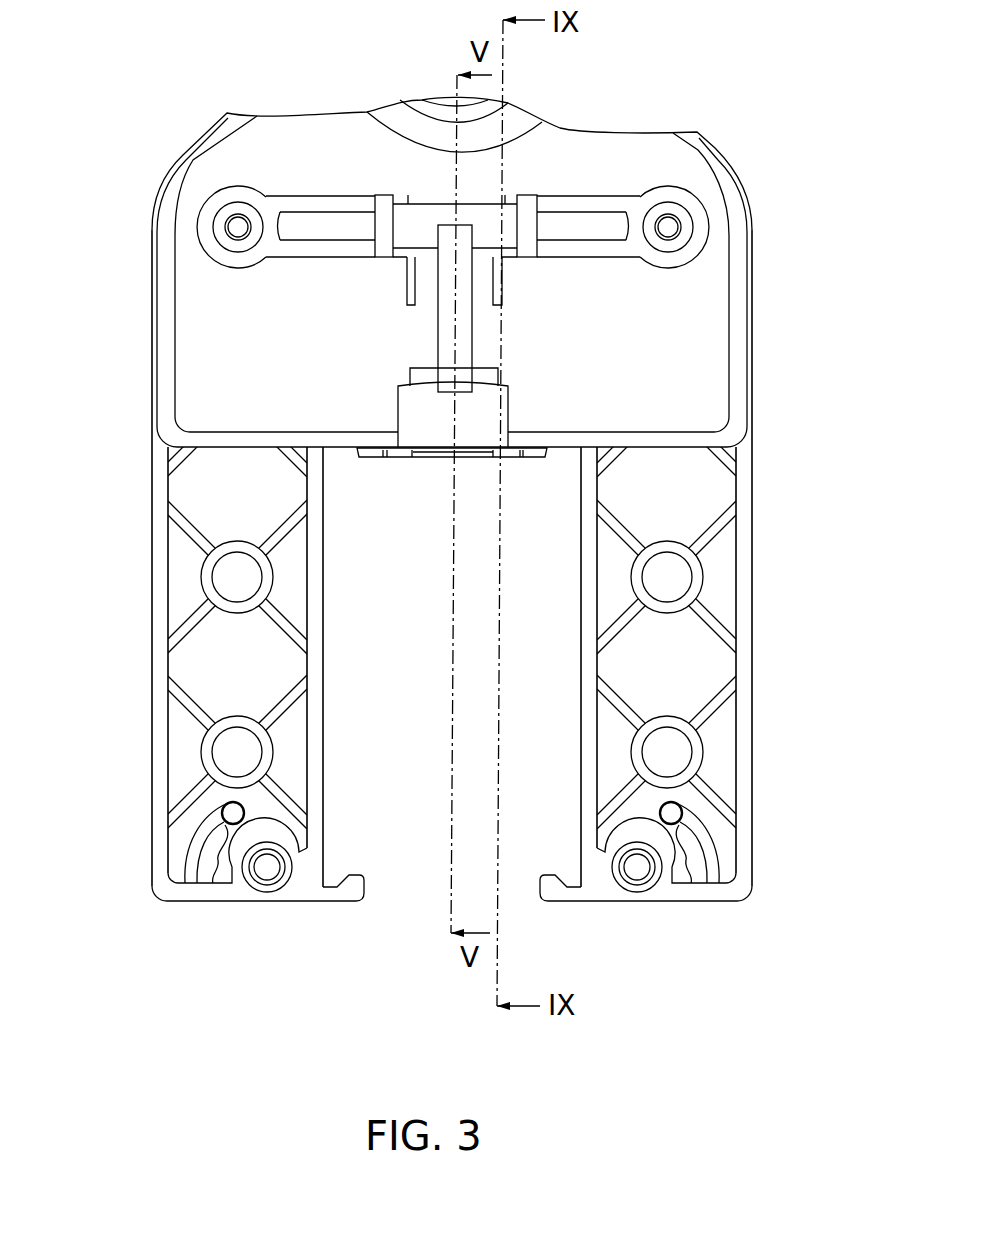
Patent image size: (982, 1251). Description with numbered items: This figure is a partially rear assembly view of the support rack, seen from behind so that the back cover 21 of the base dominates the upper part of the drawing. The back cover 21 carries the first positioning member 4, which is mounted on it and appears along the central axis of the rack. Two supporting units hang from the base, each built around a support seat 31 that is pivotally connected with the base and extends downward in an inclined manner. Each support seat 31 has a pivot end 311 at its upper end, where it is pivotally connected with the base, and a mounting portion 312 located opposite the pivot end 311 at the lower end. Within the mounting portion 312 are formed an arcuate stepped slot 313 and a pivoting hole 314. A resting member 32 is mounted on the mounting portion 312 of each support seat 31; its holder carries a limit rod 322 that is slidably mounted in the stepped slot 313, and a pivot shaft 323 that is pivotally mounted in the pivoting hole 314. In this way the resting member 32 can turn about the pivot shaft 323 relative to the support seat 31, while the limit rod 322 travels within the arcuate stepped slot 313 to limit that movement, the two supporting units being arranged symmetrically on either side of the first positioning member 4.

The back cover 21 is at (700, 308).
The pivot end 311 is at (226, 229).
The first positioning member 4 is at (426, 334).
The support seat 31 is at (158, 482).
The mounting portion 312 is at (158, 864).
The arcuate stepped slot 313 is at (203, 874).
The pivoting hole 314 is at (283, 885).
The limit rod 322 is at (222, 810).
The pivot shaft 323 is at (262, 886).
The resting member 32 is at (345, 887).